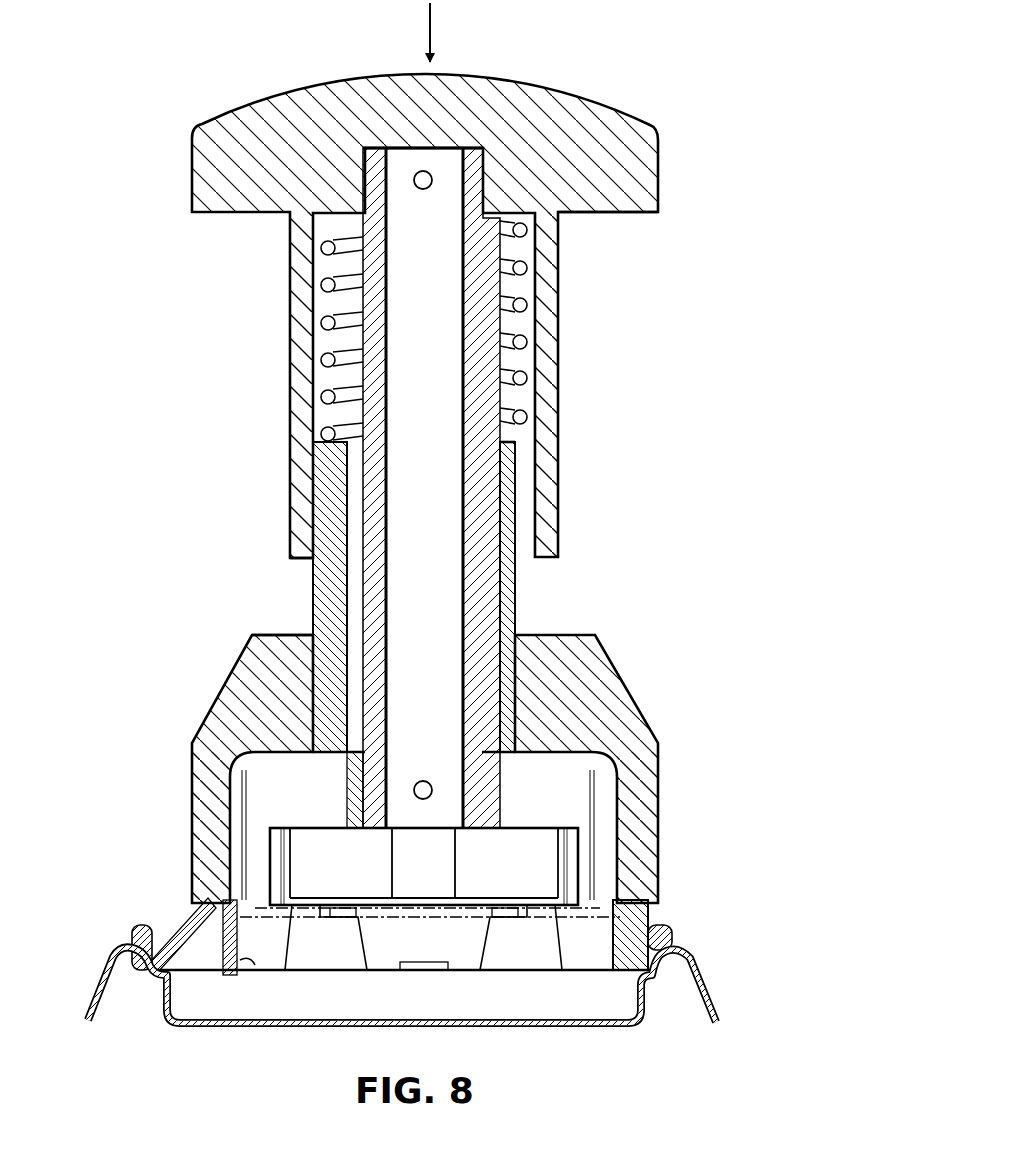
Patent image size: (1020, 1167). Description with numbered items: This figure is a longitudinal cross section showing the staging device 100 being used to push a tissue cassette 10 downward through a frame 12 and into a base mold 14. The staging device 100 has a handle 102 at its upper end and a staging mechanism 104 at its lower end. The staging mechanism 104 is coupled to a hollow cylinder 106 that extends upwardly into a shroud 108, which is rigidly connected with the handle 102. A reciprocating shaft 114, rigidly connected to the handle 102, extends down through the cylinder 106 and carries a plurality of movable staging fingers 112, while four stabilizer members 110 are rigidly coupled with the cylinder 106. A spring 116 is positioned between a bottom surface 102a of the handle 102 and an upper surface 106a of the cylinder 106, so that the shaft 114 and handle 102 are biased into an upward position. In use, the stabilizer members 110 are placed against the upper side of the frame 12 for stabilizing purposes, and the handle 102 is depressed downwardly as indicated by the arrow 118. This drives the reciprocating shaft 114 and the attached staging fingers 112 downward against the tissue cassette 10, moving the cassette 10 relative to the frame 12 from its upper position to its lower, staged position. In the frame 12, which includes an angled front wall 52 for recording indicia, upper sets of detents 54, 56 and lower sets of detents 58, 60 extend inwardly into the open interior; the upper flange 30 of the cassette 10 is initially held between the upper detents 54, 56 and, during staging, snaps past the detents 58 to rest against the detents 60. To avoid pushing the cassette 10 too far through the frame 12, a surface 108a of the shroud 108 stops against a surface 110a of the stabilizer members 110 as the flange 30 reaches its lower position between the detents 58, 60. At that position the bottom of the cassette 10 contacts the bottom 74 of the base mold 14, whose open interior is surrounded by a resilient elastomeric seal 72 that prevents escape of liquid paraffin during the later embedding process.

The staging device 100 is at (725, 97).
The handle 102 is at (565, 90).
The bottom surface of handle 102a is at (527, 216).
The staging mechanism 104 is at (621, 668).
The hollow cylinder 106 is at (510, 578).
The upper surface of cylinder 106a is at (503, 443).
The shroud 108 is at (548, 403).
The stop surface of shroud 108a is at (290, 562).
The stabilizer members 110 is at (640, 803).
The stop surface of stabilizer member 110a is at (285, 634).
The staging fingers 112 is at (600, 888).
The reciprocating shaft 114 is at (488, 630).
The spring 116 is at (525, 340).
The arrow 118 is at (433, 32).
The tissue cassette 10 is at (598, 960).
The frame 12 is at (664, 922).
The base mold 14 is at (700, 1002).
The upper flange 30 is at (460, 905).
The angled front wall 52 is at (200, 917).
The upper detents 54 is at (305, 895).
The upper detents 56 is at (355, 915).
The lower detents 58 is at (232, 975).
The lower detents 60 is at (253, 967).
The resilient elastomeric seal 72 is at (673, 930).
The bottom of base mold 74 is at (503, 1027).